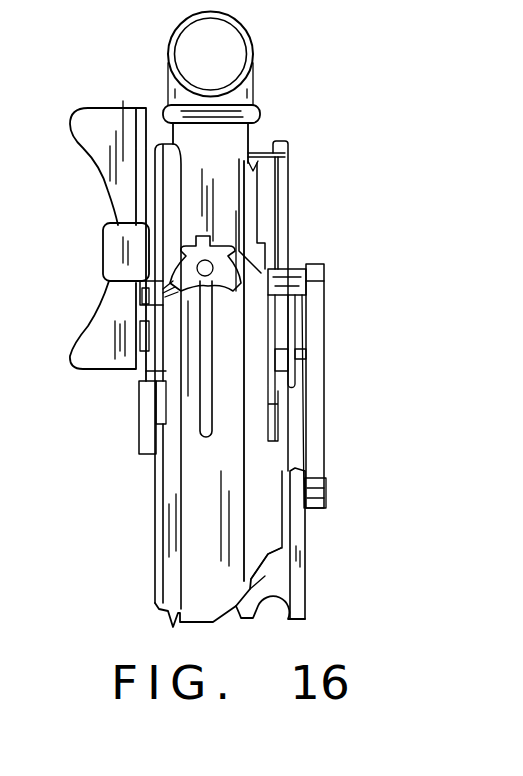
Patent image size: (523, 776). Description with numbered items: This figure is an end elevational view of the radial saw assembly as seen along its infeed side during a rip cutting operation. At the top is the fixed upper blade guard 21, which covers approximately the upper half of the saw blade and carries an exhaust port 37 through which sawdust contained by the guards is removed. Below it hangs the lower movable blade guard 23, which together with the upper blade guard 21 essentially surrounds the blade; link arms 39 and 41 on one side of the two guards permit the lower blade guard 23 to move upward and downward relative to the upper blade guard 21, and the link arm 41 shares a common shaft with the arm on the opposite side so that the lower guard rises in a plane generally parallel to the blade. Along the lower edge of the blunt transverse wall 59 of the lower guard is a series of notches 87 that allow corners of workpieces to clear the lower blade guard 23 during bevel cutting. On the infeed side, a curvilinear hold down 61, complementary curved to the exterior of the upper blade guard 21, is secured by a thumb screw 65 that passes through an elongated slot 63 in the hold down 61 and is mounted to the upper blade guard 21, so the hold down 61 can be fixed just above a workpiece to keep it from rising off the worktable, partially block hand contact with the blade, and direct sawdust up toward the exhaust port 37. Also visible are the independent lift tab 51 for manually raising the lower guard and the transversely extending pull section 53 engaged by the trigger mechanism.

The exhaust port 37 is at (252, 50).
The upper blade guard 21 is at (225, 133).
The pull section 53 is at (97, 128).
The link arm 41 is at (282, 207).
The lift tab 51 is at (106, 257).
The thumb screw 65 is at (138, 291).
The elongated slot 63 is at (195, 400).
The link arm 39 is at (315, 418).
The hold down 61 is at (193, 500).
The lower blade guard 23 is at (295, 553).
The blunt transverse wall 59 is at (277, 595).
The notches 87 is at (328, 643).